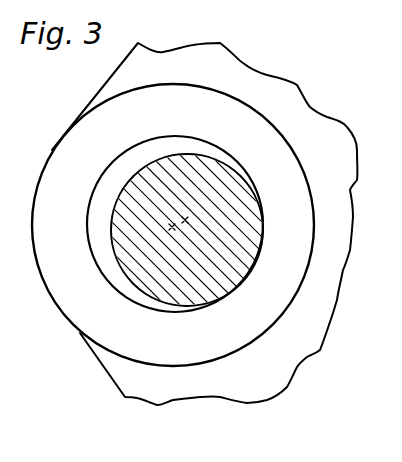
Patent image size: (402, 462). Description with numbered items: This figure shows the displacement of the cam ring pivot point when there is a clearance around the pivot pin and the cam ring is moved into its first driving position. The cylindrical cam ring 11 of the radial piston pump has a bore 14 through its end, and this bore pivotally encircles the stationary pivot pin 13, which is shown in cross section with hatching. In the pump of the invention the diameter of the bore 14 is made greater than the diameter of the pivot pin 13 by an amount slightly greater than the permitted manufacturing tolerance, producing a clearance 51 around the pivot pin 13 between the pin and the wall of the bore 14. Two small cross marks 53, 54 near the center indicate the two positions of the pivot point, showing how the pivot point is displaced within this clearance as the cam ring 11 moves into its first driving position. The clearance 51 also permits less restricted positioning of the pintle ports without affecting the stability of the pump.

The cam ring 11 is at (325, 133).
The clearance 51 is at (97, 199).
The bore 14 is at (153, 141).
The pivot pin 13 is at (134, 263).
The axis point of shaft 53 is at (186, 219).
The axis point of bore 54 is at (171, 228).